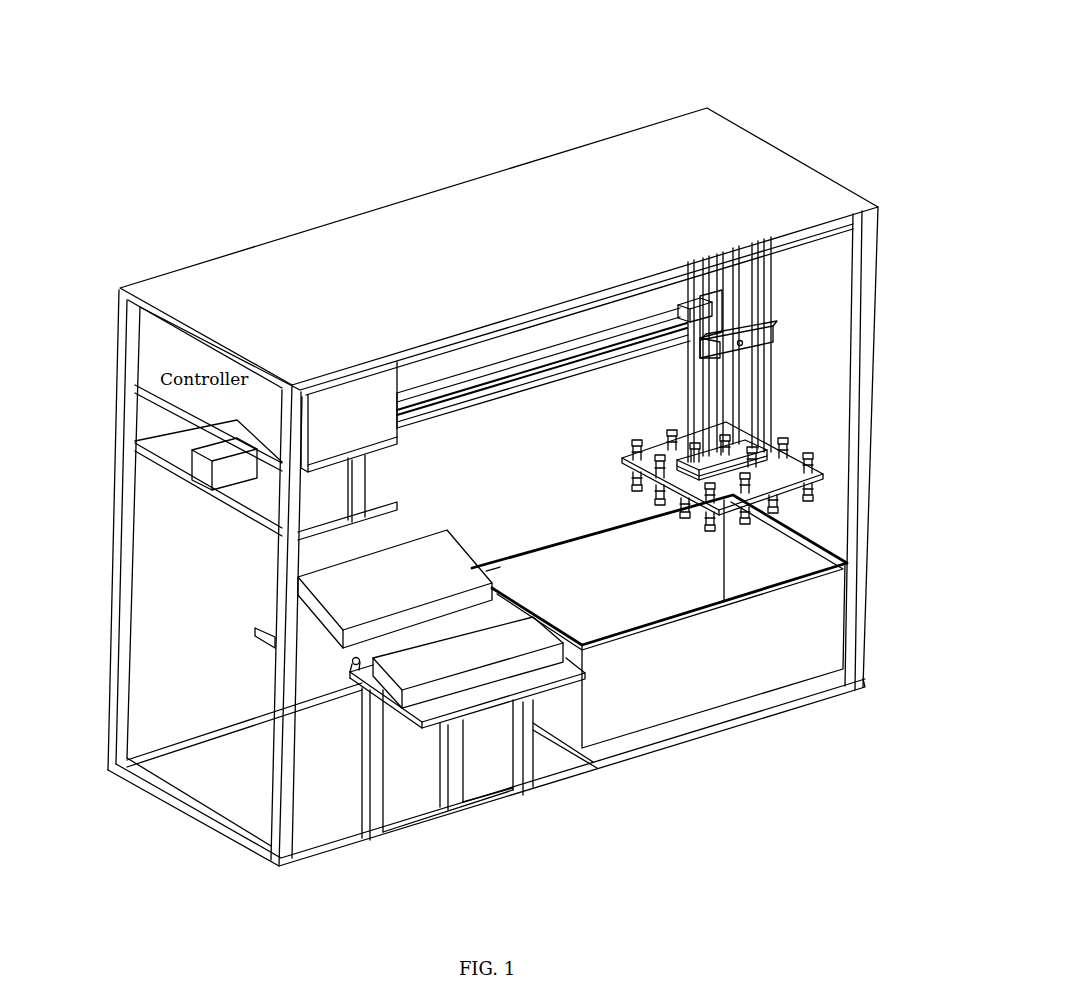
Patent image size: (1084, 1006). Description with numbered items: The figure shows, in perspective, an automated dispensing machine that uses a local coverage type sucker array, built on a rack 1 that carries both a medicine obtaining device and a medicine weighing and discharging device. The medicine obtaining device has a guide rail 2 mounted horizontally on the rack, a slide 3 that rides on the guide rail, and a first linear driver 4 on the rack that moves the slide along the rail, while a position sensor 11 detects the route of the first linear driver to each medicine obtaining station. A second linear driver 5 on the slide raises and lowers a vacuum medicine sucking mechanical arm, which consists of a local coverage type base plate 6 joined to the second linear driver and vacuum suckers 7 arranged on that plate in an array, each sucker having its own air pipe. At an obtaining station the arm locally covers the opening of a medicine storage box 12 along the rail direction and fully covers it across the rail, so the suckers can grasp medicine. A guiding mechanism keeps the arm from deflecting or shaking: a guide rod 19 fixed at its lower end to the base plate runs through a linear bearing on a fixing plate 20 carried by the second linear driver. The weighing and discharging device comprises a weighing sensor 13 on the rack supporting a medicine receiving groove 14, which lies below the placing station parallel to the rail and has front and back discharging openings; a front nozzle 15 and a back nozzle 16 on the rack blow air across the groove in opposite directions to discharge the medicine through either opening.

The rack 1 is at (116, 652).
The guide rail 2 is at (500, 405).
The slide 3 is at (703, 303).
The first linear driver 4 is at (193, 457).
The second linear driver 5 is at (735, 373).
The local coverage type base plate 6 is at (792, 476).
The vacuum suckers 7 is at (773, 507).
The position sensor 11 is at (690, 303).
The medicine storage box 12 is at (658, 694).
The weighing sensor 13 is at (440, 690).
The medicine receiving groove 14 is at (395, 637).
The front nozzle 15 is at (494, 578).
The back nozzle 16 is at (347, 680).
The guide rod 19 is at (764, 365).
The fixing plate 20 is at (770, 330).